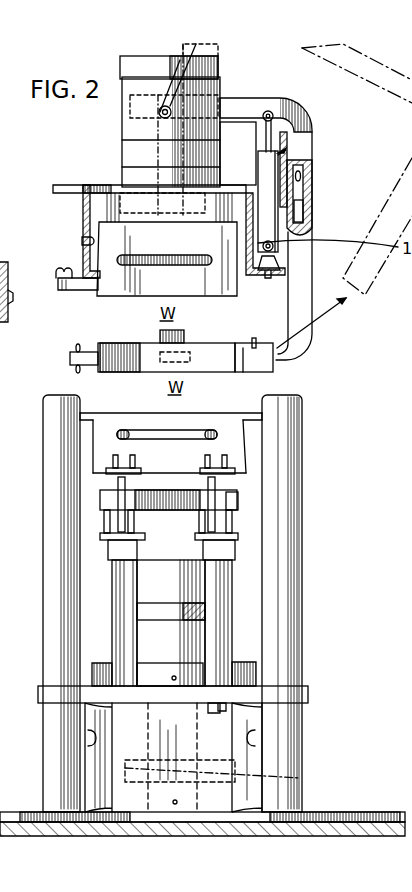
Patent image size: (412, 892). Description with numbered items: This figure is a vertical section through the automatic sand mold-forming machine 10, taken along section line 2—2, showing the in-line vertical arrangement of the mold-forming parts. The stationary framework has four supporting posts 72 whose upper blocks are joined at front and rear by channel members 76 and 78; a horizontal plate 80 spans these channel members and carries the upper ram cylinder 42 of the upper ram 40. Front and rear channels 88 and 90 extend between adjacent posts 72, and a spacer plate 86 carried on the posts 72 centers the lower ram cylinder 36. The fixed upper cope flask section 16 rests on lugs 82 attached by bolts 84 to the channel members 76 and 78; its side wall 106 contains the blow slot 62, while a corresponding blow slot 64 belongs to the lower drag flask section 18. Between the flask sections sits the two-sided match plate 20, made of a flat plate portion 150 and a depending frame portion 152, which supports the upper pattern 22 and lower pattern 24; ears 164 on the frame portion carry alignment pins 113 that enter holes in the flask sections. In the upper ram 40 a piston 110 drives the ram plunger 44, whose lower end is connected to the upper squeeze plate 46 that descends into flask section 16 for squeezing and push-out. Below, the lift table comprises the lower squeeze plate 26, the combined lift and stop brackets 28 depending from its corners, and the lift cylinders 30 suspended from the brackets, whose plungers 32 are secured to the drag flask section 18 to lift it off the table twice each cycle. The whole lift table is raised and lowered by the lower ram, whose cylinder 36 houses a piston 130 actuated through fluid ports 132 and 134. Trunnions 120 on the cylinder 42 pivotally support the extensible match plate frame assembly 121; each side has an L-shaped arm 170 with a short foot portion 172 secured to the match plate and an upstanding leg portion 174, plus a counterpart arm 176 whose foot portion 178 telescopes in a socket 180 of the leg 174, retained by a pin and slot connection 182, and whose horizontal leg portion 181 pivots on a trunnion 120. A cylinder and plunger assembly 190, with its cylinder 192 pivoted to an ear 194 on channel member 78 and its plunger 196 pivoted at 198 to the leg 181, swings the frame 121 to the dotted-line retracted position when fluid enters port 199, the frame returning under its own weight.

The section line 2 is at (14, 806).
The sand mold-forming machine 10 is at (72, 160).
The upper cope flask section 16 is at (156, 248).
The lower drag flask section 18 is at (178, 463).
The match plate 20 is at (214, 366).
The upper pattern 22 is at (186, 332).
The lower pattern 24 is at (186, 368).
The lower squeeze plate 26 is at (240, 500).
The combined lift and stop brackets 28 is at (238, 524).
The lift cylinders 30 is at (115, 601).
The plungers 32 is at (126, 482).
The lower ram cylinder 36 is at (173, 730).
The upper ram 40 is at (146, 137).
The upper ram cylinder 42 is at (120, 117).
The upper ram plunger 44 is at (162, 205).
The upper squeeze plate 46 is at (194, 207).
The blow slot 62 is at (180, 256).
The blow slot 64 is at (184, 425).
The supporting posts 72 is at (45, 520).
The channel member 76 is at (83, 223).
The channel member 78 is at (257, 223).
The horizontal plate 80 is at (102, 185).
The lugs 82 is at (58, 258).
The bolts 84 is at (80, 243).
The spacer plate 86 is at (306, 690).
The front channel 88 is at (88, 737).
The rear channel 90 is at (256, 732).
The side wall 106 is at (140, 287).
The piston 110 is at (218, 76).
The alignment pins 113 is at (98, 372).
The trunnions 120 is at (174, 98).
The match plate frame assembly 121 is at (312, 193).
The piston 130 is at (303, 778).
The fluid port 132 is at (174, 676).
The fluid port 134 is at (178, 803).
The plate portion 150 is at (208, 342).
The frame portion 152 is at (118, 345).
The ears 164 is at (72, 357).
The L-shaped arm 170 is at (306, 350).
The short foot portion 172 is at (282, 362).
The upstanding leg portion 174 is at (303, 287).
The counterpart arm 176 is at (292, 110).
The short foot portion 178 is at (312, 155).
The socket 180 is at (306, 211).
The horizontal leg portion 181 is at (259, 98).
The pin and slot connection 182 is at (302, 176).
The cylinder and plunger assembly 190 is at (300, 152).
The cylinder 192 is at (258, 161).
The ear 194 is at (274, 262).
The plunger 196 is at (264, 148).
The pivot 198 is at (293, 84).
The fluid port 199 is at (266, 278).